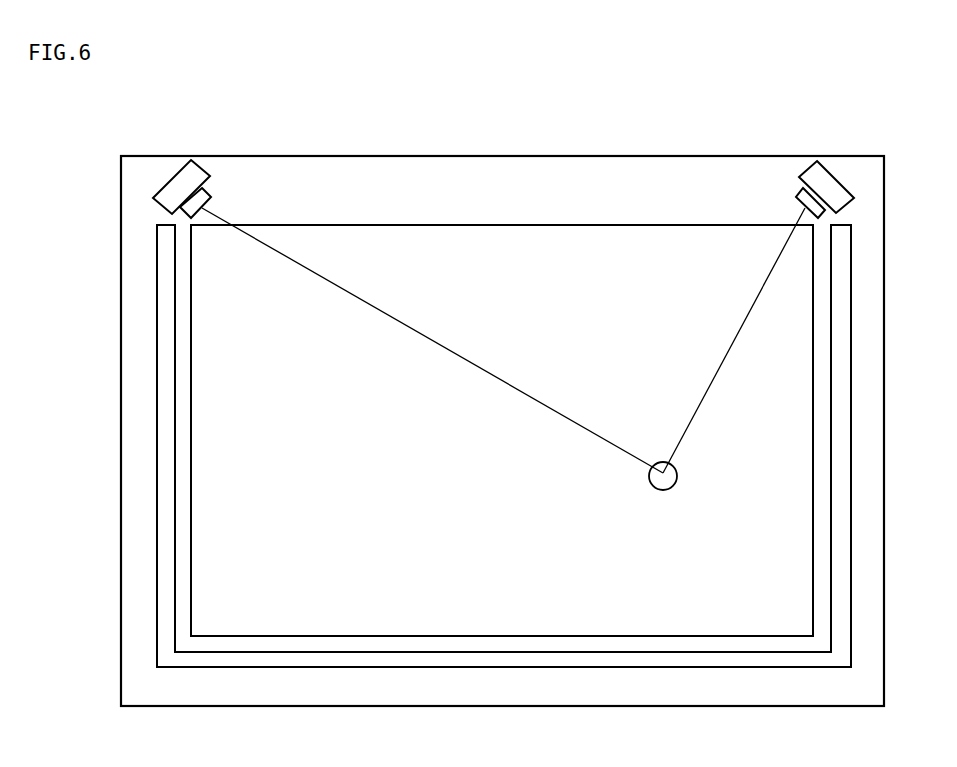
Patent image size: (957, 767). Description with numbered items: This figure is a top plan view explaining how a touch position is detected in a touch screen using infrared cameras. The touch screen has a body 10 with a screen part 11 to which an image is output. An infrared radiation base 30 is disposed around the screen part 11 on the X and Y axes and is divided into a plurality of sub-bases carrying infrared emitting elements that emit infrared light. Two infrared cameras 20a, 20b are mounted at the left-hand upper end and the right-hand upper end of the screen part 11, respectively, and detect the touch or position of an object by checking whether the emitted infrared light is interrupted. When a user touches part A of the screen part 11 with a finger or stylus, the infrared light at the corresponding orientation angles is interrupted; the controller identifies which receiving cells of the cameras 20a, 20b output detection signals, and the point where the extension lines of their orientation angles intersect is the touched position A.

The body 10 is at (479, 190).
The screen part 11 is at (572, 260).
The infrared camera 20a is at (172, 184).
The infrared camera 20b is at (828, 173).
The infrared radiation base 30 is at (167, 412).
The touched part A is at (663, 490).